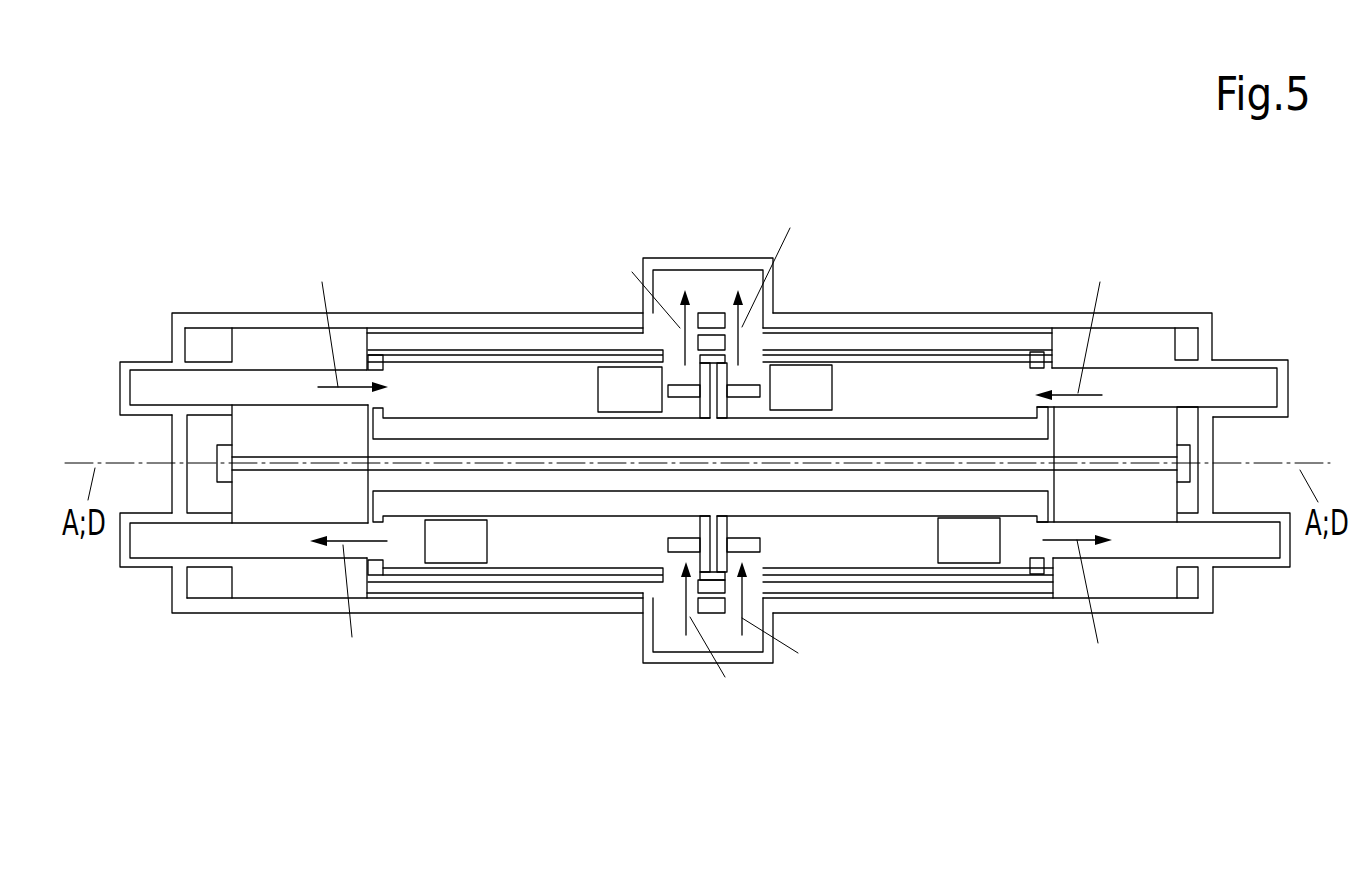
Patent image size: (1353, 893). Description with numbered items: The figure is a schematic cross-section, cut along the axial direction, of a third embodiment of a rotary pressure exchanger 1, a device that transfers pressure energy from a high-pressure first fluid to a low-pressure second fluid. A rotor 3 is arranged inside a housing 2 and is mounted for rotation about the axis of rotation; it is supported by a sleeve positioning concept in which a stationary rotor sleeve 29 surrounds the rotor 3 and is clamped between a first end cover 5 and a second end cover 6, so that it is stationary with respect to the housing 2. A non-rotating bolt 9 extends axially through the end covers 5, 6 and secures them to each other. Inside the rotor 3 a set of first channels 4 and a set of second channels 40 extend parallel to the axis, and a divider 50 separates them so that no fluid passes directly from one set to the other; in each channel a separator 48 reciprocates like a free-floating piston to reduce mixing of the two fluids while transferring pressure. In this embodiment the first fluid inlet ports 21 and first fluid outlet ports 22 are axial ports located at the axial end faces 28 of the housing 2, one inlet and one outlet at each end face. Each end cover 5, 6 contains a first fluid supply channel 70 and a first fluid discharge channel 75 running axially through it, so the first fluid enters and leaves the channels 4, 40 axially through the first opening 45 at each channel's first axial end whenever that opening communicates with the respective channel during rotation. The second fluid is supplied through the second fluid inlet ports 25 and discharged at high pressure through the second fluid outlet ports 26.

The rotary pressure exchanger 1 is at (1222, 210).
The housing 2 is at (1165, 312).
The rotor 3 is at (455, 357).
The first channels 4 is at (565, 550).
The first end cover 5 is at (255, 347).
The second end cover 6 is at (1157, 585).
The bolt 9 is at (518, 461).
The first fluid inlet ports 21 is at (135, 360).
The first fluid outlet ports 22 is at (140, 567).
The second fluid inlet ports 25 is at (650, 642).
The second fluid outlet ports 26 is at (645, 258).
The axial end faces 28 is at (170, 323).
The rotor sleeve 29 is at (545, 327).
The second channels 40 is at (905, 550).
The first opening 45 is at (399, 392).
The separator 48 is at (825, 375).
The divider 50 is at (723, 390).
The first fluid supply channel 70 is at (298, 387).
The first fluid discharge channel 75 is at (257, 547).